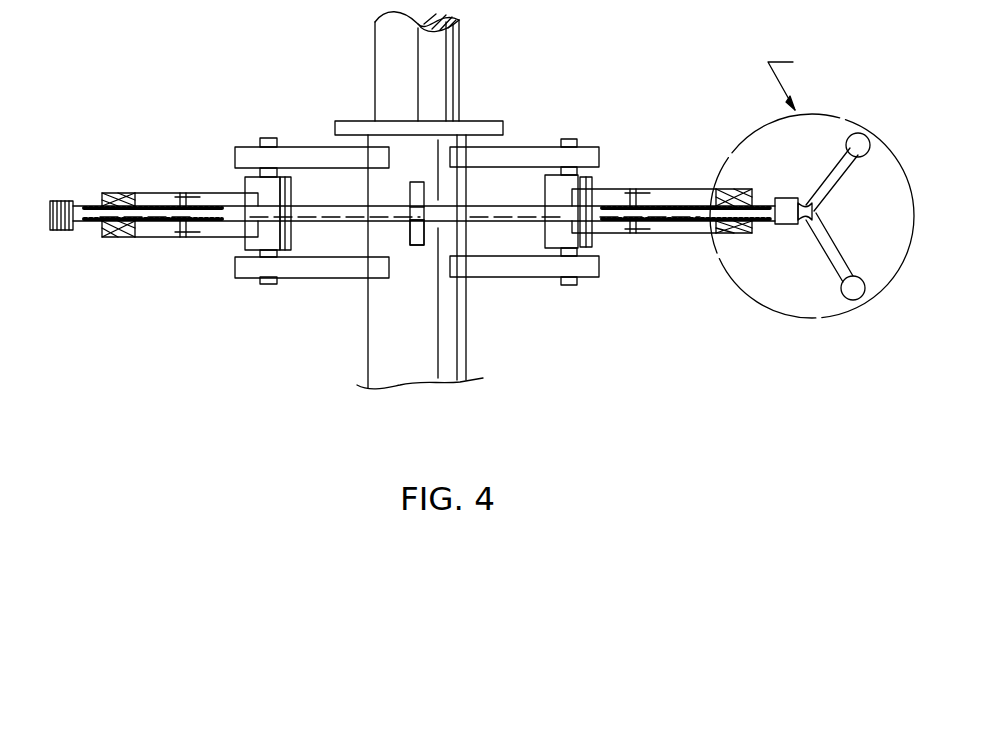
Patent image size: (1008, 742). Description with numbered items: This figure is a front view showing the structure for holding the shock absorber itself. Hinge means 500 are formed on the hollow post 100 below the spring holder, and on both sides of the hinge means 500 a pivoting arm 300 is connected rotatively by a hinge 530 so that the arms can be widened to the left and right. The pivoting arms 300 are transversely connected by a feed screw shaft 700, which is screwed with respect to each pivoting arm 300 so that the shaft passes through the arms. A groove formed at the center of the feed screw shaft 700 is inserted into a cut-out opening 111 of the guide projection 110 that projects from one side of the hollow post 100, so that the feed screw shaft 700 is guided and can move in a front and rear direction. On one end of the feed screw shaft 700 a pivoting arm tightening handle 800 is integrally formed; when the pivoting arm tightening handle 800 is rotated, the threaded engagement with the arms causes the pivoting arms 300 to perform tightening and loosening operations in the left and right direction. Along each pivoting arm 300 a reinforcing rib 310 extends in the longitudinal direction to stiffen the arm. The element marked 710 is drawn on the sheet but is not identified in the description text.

The hollow post 100 is at (472, 350).
The guide projection 110 is at (417, 245).
The cut-out opening 111 is at (417, 202).
The pivoting arm 300 is at (668, 233).
The reinforcing rib 310 is at (64, 201).
The hinge means 500 is at (522, 147).
The hinge 530 is at (573, 139).
The feed screw shaft 700 is at (337, 222).
The first screw housing 710 is at (163, 197).
The pivoting arm tightening handle 800 is at (820, 255).